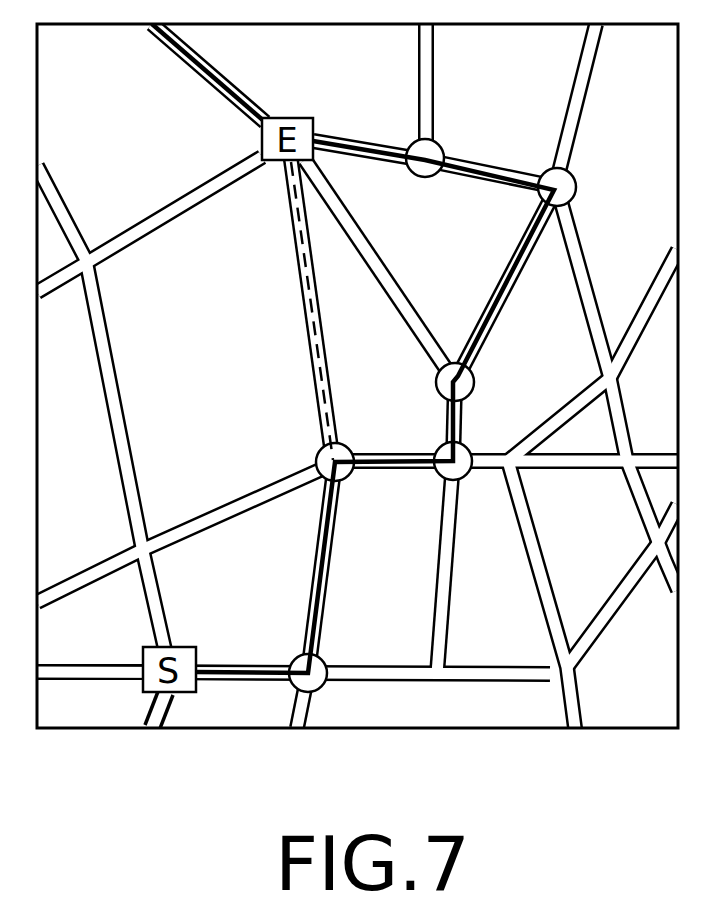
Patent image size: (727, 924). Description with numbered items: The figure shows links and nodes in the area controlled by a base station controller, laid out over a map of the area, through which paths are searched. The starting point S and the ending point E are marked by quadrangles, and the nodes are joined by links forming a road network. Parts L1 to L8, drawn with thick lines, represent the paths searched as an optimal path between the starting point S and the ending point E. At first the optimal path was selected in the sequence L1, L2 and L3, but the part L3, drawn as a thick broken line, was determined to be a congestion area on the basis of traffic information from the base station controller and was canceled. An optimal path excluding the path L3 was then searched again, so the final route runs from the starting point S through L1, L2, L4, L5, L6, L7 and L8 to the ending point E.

The path part L1 is at (238, 665).
The path part L2 is at (332, 572).
The canceled path L3 is at (305, 300).
The path part L4 is at (390, 470).
The path part L5 is at (448, 418).
The path part L6 is at (513, 278).
The path part L7 is at (490, 163).
The path part L8 is at (352, 140).